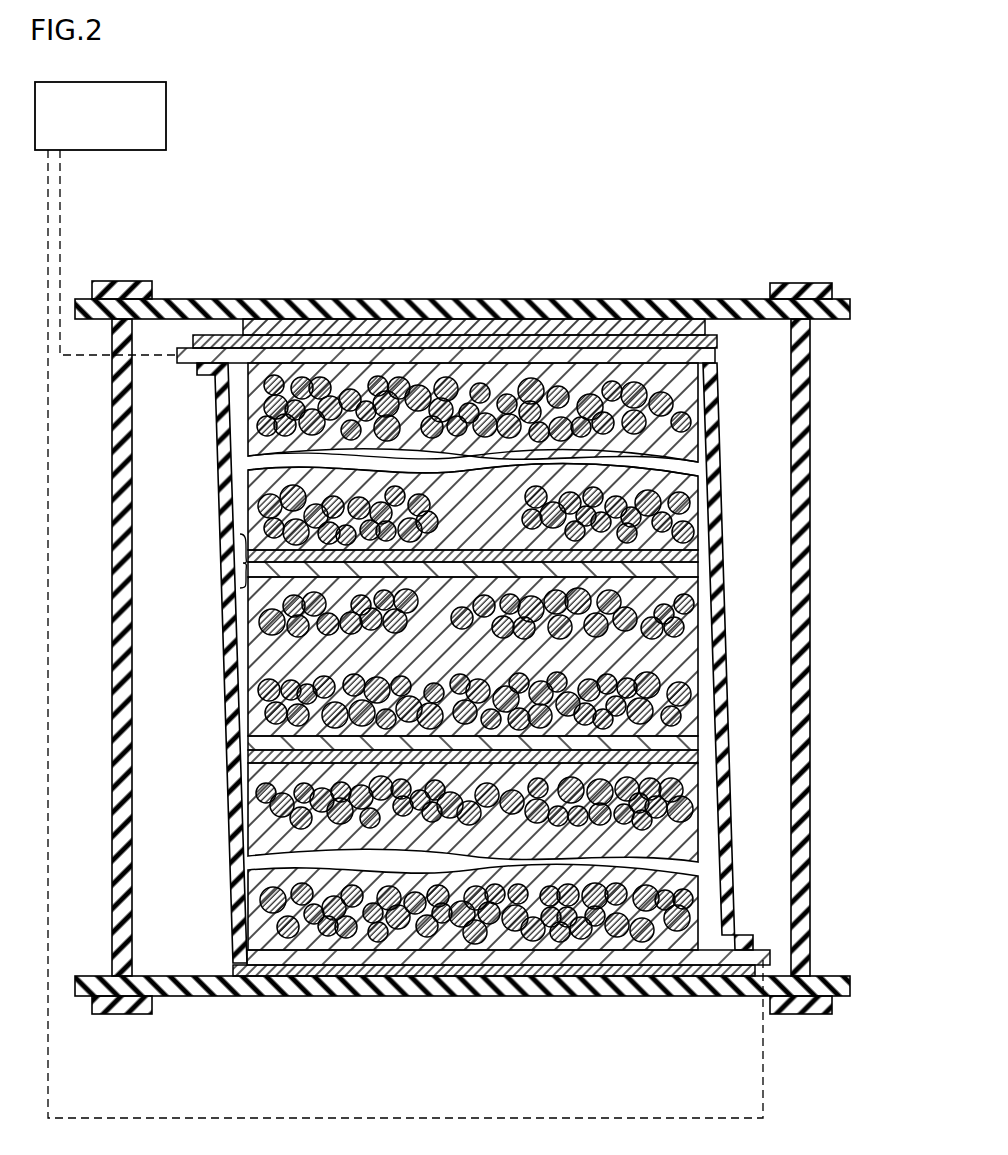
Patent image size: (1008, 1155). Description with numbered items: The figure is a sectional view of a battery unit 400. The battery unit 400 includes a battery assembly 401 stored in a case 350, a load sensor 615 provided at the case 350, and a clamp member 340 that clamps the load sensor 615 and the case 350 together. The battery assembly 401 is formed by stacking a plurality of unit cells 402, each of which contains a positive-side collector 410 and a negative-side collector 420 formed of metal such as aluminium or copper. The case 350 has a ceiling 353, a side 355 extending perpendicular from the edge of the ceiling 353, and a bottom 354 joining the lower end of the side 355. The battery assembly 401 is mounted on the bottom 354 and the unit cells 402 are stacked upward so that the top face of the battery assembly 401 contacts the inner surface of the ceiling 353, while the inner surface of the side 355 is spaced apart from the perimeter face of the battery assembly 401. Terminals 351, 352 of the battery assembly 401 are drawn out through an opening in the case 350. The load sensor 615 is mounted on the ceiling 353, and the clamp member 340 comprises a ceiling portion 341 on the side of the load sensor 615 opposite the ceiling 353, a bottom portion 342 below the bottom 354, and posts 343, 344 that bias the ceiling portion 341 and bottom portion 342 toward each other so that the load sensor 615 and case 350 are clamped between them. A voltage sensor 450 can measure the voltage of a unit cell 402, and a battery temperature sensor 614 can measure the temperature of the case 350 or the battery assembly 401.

The battery unit 400 is at (582, 238).
The battery assembly 401 is at (515, 648).
The unit cell 402 is at (702, 453).
The positive-side collector 410 is at (690, 351).
The negative-side collector 420 is at (693, 556).
The battery temperature sensor 614 is at (240, 563).
The load sensor 615 is at (410, 330).
The clamp member 340 is at (309, 286).
The ceiling portion 341 is at (693, 300).
The bottom portion 342 is at (598, 996).
The post 343 is at (806, 819).
The post 344 is at (131, 700).
The case 350 is at (522, 728).
The terminal 351 is at (183, 350).
The terminal 352 is at (766, 950).
The ceiling 353 is at (492, 340).
The bottom 354 is at (425, 977).
The side 355 is at (238, 783).
The voltage sensor 450 is at (168, 130).